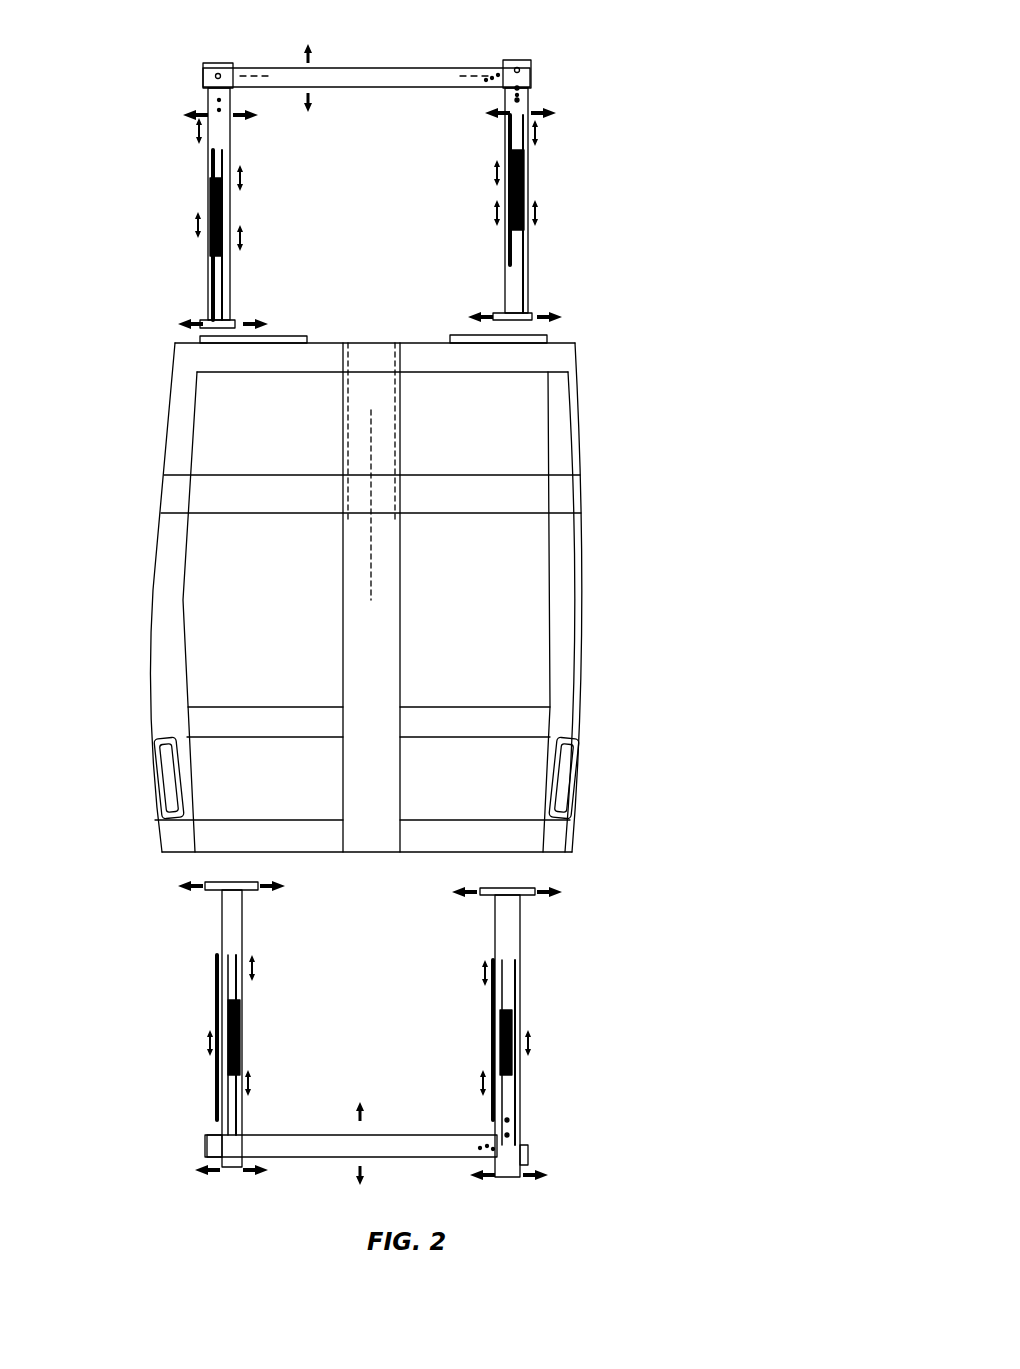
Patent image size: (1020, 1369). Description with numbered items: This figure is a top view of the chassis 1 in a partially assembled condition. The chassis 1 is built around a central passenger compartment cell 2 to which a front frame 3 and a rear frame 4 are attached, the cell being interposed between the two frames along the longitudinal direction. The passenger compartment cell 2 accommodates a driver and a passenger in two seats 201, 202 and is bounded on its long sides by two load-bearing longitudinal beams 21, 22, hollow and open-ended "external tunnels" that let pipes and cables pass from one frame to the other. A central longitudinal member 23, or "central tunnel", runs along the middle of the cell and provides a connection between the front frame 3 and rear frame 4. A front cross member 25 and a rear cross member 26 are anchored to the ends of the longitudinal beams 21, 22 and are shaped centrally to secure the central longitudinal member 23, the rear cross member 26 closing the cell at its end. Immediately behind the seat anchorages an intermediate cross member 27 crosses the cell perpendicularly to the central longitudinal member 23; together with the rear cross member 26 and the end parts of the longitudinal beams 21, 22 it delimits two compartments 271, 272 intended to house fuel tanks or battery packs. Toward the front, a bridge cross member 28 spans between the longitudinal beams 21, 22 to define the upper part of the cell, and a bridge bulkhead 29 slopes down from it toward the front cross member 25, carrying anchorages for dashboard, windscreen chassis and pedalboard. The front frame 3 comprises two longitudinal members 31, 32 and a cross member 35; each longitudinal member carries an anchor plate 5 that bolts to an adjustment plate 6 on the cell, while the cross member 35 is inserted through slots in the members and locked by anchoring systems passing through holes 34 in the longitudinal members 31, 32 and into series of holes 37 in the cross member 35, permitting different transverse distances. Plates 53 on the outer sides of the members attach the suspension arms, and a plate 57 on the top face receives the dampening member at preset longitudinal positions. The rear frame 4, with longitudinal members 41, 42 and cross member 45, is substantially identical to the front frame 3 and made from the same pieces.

The chassis 1 is at (696, 299).
The passenger compartment cell 2 is at (438, 595).
The front frame 3 is at (598, 135).
The rear frame 4 is at (453, 1123).
The anchor plate 5 is at (230, 318).
The adjustment plate 6 is at (200, 338).
The longitudinal beam 21 is at (175, 545).
The longitudinal beam 22 is at (573, 622).
The central longitudinal member 23 is at (365, 618).
The front cross member 25 is at (512, 360).
The rear cross member 26 is at (515, 833).
The intermediate cross member 27 is at (520, 718).
The bridge cross member 28 is at (520, 500).
The bridge bulkhead 29 is at (495, 435).
The longitudinal member 31 is at (230, 70).
The longitudinal member 32 is at (533, 64).
The holes 34 is at (527, 100).
The cross member 35 is at (470, 70).
The holes 37 is at (500, 66).
The longitudinal member 41 is at (250, 950).
The longitudinal member 42 is at (497, 1010).
The cross member 45 is at (410, 1158).
The plate 53 is at (200, 138).
The plate 57 is at (214, 190).
The seat 201 is at (264, 613).
The seat 202 is at (478, 573).
The compartment 271 is at (251, 774).
The compartment 272 is at (478, 788).